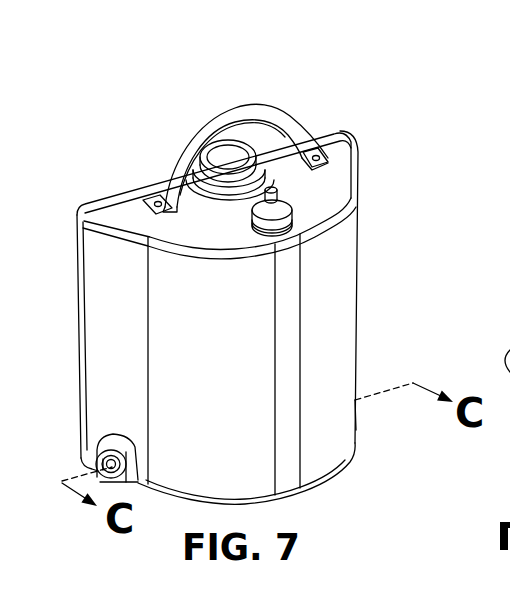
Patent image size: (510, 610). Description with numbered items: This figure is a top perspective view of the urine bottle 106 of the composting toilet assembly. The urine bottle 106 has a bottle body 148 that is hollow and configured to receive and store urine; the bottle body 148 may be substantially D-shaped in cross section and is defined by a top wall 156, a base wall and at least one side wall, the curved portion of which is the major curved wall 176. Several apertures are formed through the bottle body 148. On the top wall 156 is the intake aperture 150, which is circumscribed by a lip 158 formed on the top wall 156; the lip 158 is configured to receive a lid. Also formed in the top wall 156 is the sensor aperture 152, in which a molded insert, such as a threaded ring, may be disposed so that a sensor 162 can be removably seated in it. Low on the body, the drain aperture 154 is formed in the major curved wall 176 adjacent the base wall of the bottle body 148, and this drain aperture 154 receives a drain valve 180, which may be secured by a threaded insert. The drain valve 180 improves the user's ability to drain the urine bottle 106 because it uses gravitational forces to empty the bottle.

The urine bottle 106 is at (362, 100).
The bottle body 148 is at (360, 283).
The intake aperture 150 is at (238, 141).
The sensor aperture 152 is at (291, 220).
The drain aperture 154 is at (140, 478).
The top wall 156 is at (125, 208).
The lip 158 is at (230, 172).
The sensor 162 is at (298, 195).
The major curved wall 176 is at (345, 415).
The drain valve 180 is at (107, 447).